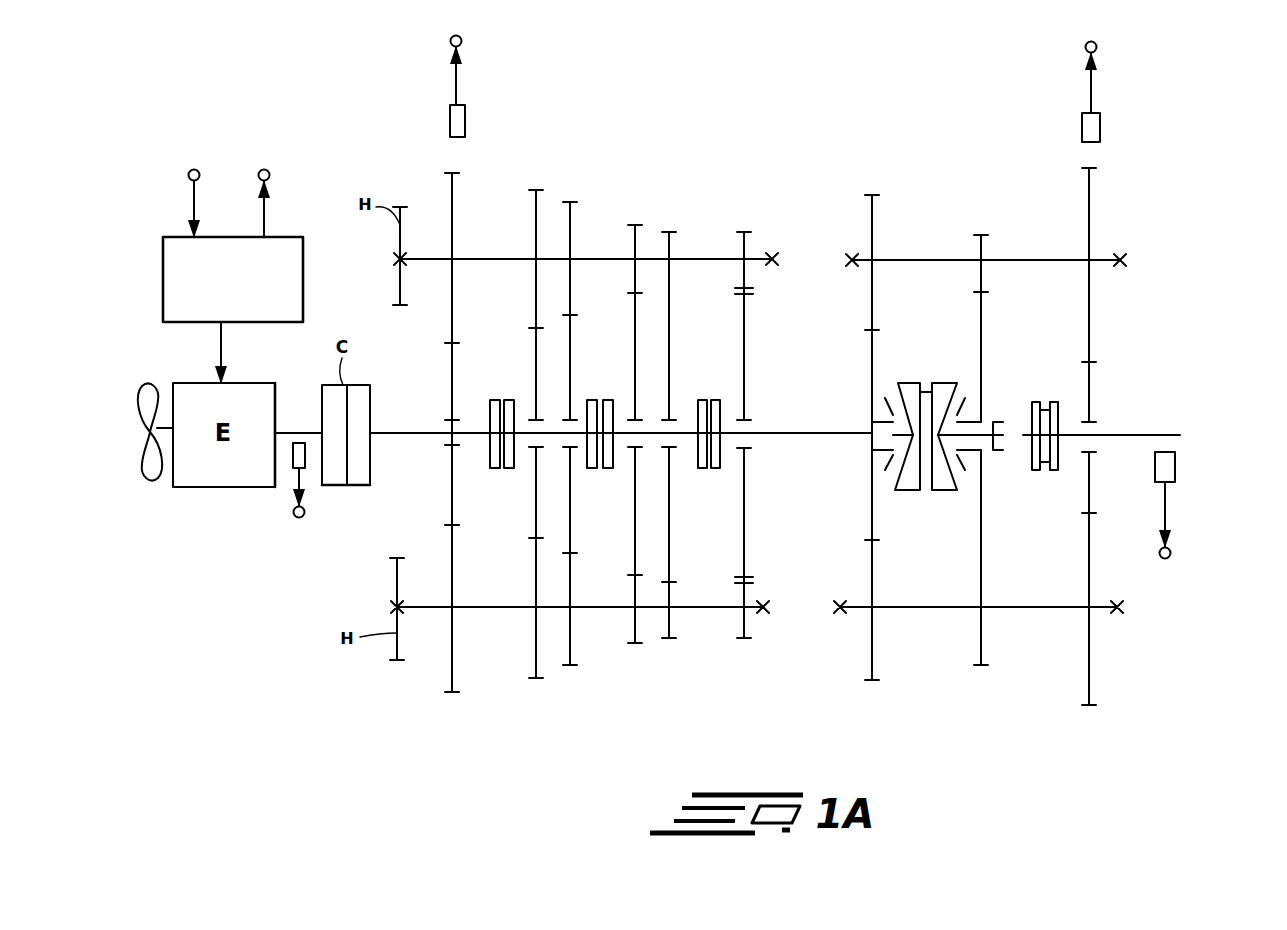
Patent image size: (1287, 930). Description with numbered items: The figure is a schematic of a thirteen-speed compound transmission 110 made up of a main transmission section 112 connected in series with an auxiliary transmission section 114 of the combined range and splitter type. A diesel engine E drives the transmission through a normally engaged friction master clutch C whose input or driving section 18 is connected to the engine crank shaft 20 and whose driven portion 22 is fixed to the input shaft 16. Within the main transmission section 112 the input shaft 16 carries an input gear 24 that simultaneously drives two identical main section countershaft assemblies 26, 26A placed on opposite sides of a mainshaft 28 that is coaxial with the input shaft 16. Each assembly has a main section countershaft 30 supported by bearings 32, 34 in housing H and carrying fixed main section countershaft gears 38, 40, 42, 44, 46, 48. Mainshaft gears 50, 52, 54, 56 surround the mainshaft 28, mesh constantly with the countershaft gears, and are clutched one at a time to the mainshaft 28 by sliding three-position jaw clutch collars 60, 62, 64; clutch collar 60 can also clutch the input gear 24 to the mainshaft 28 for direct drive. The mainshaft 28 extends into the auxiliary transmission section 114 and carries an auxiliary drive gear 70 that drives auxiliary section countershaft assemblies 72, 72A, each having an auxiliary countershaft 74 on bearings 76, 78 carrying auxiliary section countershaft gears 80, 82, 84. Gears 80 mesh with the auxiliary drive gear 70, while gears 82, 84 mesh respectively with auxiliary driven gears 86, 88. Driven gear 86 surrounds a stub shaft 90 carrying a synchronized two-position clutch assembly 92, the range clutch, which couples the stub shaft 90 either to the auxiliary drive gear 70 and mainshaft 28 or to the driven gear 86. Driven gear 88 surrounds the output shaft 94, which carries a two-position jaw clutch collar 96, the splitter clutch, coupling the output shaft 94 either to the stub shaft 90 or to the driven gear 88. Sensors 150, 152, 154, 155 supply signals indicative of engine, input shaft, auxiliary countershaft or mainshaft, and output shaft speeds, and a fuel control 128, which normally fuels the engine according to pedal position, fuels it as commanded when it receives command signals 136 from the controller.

The input shaft 16 is at (403, 432).
The input or driving section 18 is at (332, 486).
The engine crank shaft 20 is at (301, 432).
The driven portion 22 is at (369, 486).
The input gear 24 is at (450, 483).
The main section countershaft assembly 26 is at (701, 255).
The main section countershaft assembly 26A is at (479, 604).
The mainshaft 28 is at (806, 432).
The main section countershaft 30 is at (488, 261).
The bearing 32 is at (398, 259).
The bearing 34 is at (773, 256).
The main section countershaft gear 38 is at (452, 190).
The main section countershaft gear 40 is at (536, 228).
The main section countershaft gear 42 is at (571, 232).
The main section countershaft gear 44 is at (635, 276).
The main section countershaft gear 46 is at (670, 277).
The main section countershaft gear 48 is at (747, 280).
The mainshaft gear 50 is at (536, 373).
The mainshaft gear 52 is at (572, 345).
The mainshaft gear 54 is at (635, 378).
The mainshaft gear 56 is at (669, 490).
The clutch collar 60 is at (490, 468).
The clutch collar 62 is at (588, 468).
The clutch collar 64 is at (713, 400).
The auxiliary drive gear 70 is at (872, 505).
The auxiliary section countershaft assembly 72 is at (1041, 257).
The auxiliary section countershaft assembly 72A is at (1021, 604).
The auxiliary countershaft 74 is at (910, 263).
The bearing 76 is at (1122, 260).
The bearing 78 is at (851, 258).
The auxiliary section countershaft gear 80 is at (873, 222).
The auxiliary section countershaft gear 82 is at (982, 245).
The auxiliary section countershaft gear 84 is at (1090, 195).
The auxiliary section driven gear 86 is at (982, 328).
The auxiliary section driven gear 88 is at (1090, 390).
The stub shaft 90 is at (905, 438).
The synchronized clutch assembly 92 is at (947, 382).
The output shaft 94 is at (1167, 433).
The jaw clutch collar 96 is at (1035, 402).
The compound transmission 110 is at (470, 713).
The main transmission section 112 is at (604, 188).
The auxiliary transmission section 114 is at (953, 194).
The fuel control 128 is at (162, 277).
The command signals 136 is at (191, 200).
The sensor 150 is at (293, 482).
The sensor 152 is at (465, 120).
The sensor 154 is at (1100, 125).
The sensor 155 is at (1176, 512).